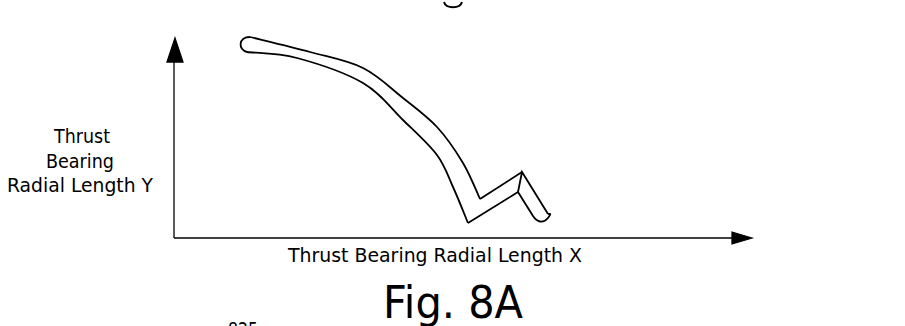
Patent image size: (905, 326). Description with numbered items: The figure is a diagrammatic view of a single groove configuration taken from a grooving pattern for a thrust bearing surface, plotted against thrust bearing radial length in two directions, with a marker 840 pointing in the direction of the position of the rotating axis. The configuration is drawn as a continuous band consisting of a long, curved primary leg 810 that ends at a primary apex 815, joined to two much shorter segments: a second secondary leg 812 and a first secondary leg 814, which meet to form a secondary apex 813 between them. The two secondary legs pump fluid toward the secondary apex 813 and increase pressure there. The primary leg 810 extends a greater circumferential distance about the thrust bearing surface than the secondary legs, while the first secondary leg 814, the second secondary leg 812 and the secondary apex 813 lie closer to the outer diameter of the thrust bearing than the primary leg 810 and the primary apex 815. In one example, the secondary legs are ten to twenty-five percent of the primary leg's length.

The primary leg 810 is at (435, 111).
The second secondary leg 812 is at (496, 190).
The secondary apex 813 is at (522, 172).
The first secondary leg 814 is at (538, 204).
The primary apex 815 is at (259, 42).
The marker 840 is at (181, 228).